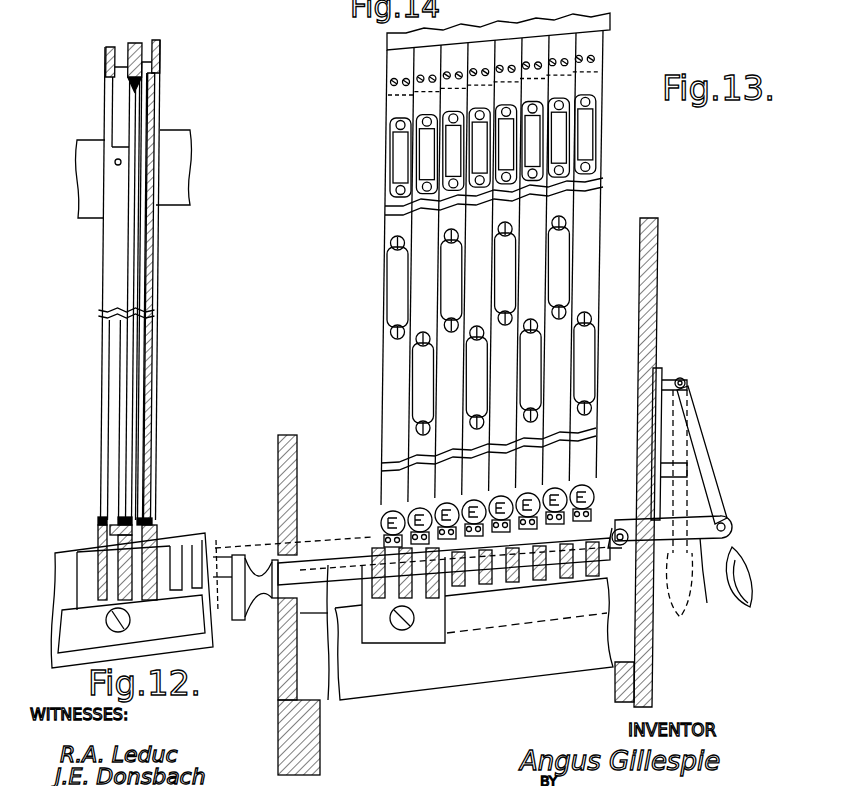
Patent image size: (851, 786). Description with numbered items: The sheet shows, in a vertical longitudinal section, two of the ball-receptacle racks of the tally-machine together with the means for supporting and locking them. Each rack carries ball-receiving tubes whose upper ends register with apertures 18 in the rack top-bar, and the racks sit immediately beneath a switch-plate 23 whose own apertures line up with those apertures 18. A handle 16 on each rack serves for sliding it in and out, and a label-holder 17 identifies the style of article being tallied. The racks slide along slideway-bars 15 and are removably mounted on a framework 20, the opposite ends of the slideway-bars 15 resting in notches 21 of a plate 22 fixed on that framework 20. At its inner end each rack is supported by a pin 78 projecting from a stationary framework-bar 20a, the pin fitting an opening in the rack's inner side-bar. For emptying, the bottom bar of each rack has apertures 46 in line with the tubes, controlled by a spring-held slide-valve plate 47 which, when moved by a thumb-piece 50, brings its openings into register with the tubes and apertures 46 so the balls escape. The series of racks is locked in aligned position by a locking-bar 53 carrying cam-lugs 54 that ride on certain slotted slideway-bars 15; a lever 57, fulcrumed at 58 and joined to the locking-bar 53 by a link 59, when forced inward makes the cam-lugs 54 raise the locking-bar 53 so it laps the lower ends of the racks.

In FIG. 13, the slideway-bars 15 is at (393, 584).
In FIG. 13, the handle 16 is at (417, 403).
In FIG. 13, the label-holder 17 is at (427, 142).
In FIG. 12, the apertures 18 is at (148, 43).
In FIG. 13, the framework 20 is at (297, 460).
In FIG. 12, the stationary framework-bar 20a is at (190, 167).
In FIG. 12, the notches 21 is at (56, 586).
In FIG. 12, the plate 22 is at (187, 622).
In FIG. 13, the switch-plate 23 is at (612, 22).
In FIG. 12, the apertures 46 is at (112, 542).
In FIG. 12, the slide-valve plate 47 is at (158, 517).
In FIG. 13, the thumb-piece 50 is at (587, 486).
In FIG. 13, the locking-bar 53 is at (343, 568).
In FIG. 13, the cam-lugs 54 is at (483, 567).
In FIG. 13, the lever 57 is at (728, 498).
In FIG. 13, the fulcrum 58 is at (688, 382).
In FIG. 13, the link 59 is at (726, 581).
In FIG. 12, the pin 78 is at (115, 163).